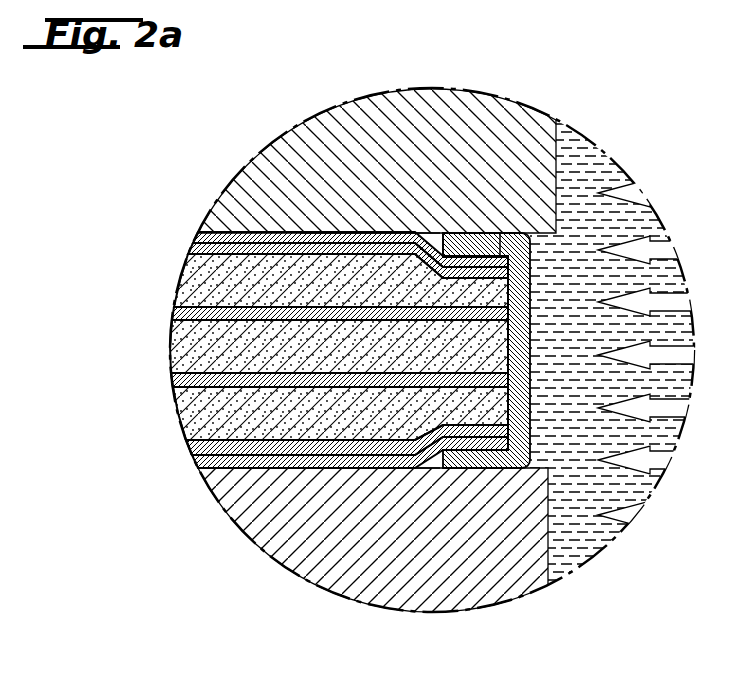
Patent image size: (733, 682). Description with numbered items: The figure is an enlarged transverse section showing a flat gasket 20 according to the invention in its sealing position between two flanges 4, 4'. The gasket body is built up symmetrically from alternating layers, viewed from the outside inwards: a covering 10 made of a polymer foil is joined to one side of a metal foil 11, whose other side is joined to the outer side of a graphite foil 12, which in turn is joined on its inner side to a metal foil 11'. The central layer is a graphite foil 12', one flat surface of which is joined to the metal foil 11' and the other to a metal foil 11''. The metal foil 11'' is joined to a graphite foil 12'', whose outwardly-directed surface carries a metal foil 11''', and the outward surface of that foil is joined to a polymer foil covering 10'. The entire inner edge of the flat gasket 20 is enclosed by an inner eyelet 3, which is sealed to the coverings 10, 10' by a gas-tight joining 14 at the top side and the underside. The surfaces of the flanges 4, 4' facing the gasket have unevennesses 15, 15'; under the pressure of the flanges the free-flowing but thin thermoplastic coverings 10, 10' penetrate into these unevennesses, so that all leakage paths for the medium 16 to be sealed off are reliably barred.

The inner eyelet 3 is at (497, 233).
The flange 4 is at (377, 142).
The flange 4' is at (373, 550).
The covering 10 is at (329, 222).
The polymer foil covering 10' is at (324, 474).
The metal foil 11 is at (320, 243).
The metal foil 11' is at (309, 304).
The metal foil 11'' is at (305, 389).
The metal foil 11''' is at (316, 451).
The graphite foil 12 is at (315, 276).
The graphite foil 12' is at (305, 346).
The graphite foil 12'' is at (313, 416).
The gas-tight joining 14 is at (465, 250).
The unevennesses 15 is at (370, 200).
The unevennesses 15' is at (387, 501).
The medium 16 is at (578, 147).
The flat gasket 20 is at (276, 345).